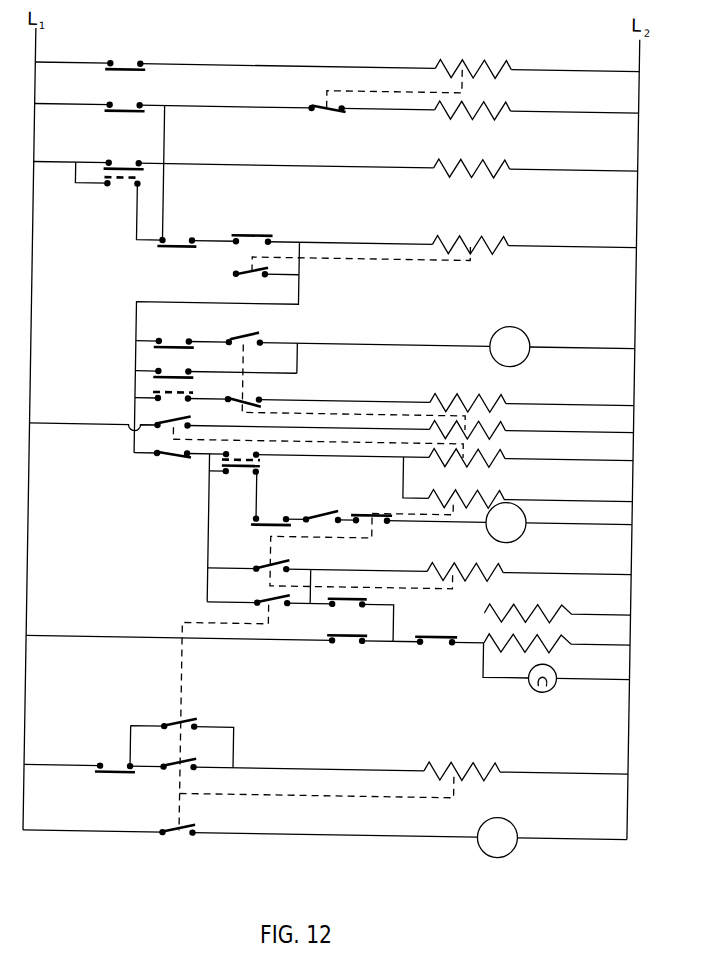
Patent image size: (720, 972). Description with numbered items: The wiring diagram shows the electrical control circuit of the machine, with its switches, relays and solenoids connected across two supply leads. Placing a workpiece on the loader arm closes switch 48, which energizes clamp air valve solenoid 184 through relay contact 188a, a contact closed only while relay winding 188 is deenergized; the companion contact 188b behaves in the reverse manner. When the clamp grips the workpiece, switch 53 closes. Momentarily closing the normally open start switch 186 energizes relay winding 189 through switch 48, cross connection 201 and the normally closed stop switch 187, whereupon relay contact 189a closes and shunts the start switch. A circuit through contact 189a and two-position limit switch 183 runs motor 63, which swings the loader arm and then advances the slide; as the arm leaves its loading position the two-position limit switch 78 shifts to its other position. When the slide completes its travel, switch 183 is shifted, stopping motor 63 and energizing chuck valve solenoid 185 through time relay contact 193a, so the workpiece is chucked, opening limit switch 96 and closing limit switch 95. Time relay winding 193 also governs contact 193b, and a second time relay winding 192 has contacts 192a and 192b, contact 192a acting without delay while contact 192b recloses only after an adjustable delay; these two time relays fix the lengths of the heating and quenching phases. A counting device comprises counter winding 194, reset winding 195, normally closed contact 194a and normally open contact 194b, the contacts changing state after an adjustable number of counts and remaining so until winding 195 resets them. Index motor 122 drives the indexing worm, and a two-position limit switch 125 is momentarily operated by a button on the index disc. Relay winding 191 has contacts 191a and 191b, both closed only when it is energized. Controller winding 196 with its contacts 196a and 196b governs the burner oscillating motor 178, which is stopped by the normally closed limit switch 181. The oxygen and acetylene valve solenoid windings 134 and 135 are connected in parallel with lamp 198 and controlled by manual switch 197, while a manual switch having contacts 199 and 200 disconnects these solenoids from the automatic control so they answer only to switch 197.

The limit switch 95 is at (131, 66).
The switch 48 is at (119, 109).
The cross connection 201 is at (170, 135).
The two-position limit switch 78 is at (126, 156).
The stop switch 187 is at (176, 236).
The start switch 186 is at (262, 235).
The relay contact 189a is at (249, 280).
The relay contact 188a is at (338, 104).
The relay winding 188 is at (466, 62).
The solenoid 184 is at (489, 109).
The reset winding 195 is at (466, 175).
The relay winding 189 is at (474, 237).
The limit switch 96 is at (170, 336).
The two-position limit switch 183 is at (186, 373).
The time relay contact 193b is at (252, 331).
The time relay contact 193a is at (278, 396).
The motor 63 is at (554, 347).
The solenoid 185 is at (490, 400).
The normally open contact 194b is at (176, 417).
The time relay winding 193 is at (484, 426).
The normally closed contact 194a is at (180, 454).
The counter winding 194 is at (484, 456).
The two-position limit switch 125 is at (266, 466).
The time relay winding 192 is at (480, 492).
The switch 53 is at (266, 519).
The relay contact 188b is at (314, 512).
The time relay contact 192b is at (376, 516).
The motor 122 is at (551, 523).
The time relay contact 192a is at (270, 566).
The relay winding 191 is at (480, 563).
The relay contact 191a is at (283, 598).
The manual switch contact 199 is at (358, 596).
The manual switch contact 200 is at (352, 638).
The manual switch 197 is at (434, 638).
The solenoid winding 134 is at (544, 605).
The solenoid winding 135 is at (526, 632).
The lamp 198 is at (565, 662).
The relay contact 191b is at (204, 717).
The limit switch 181 is at (130, 771).
The controller contact 196a is at (212, 757).
The controller winding 196 is at (468, 758).
The controller contact 196b is at (205, 824).
The motor 178 is at (508, 850).